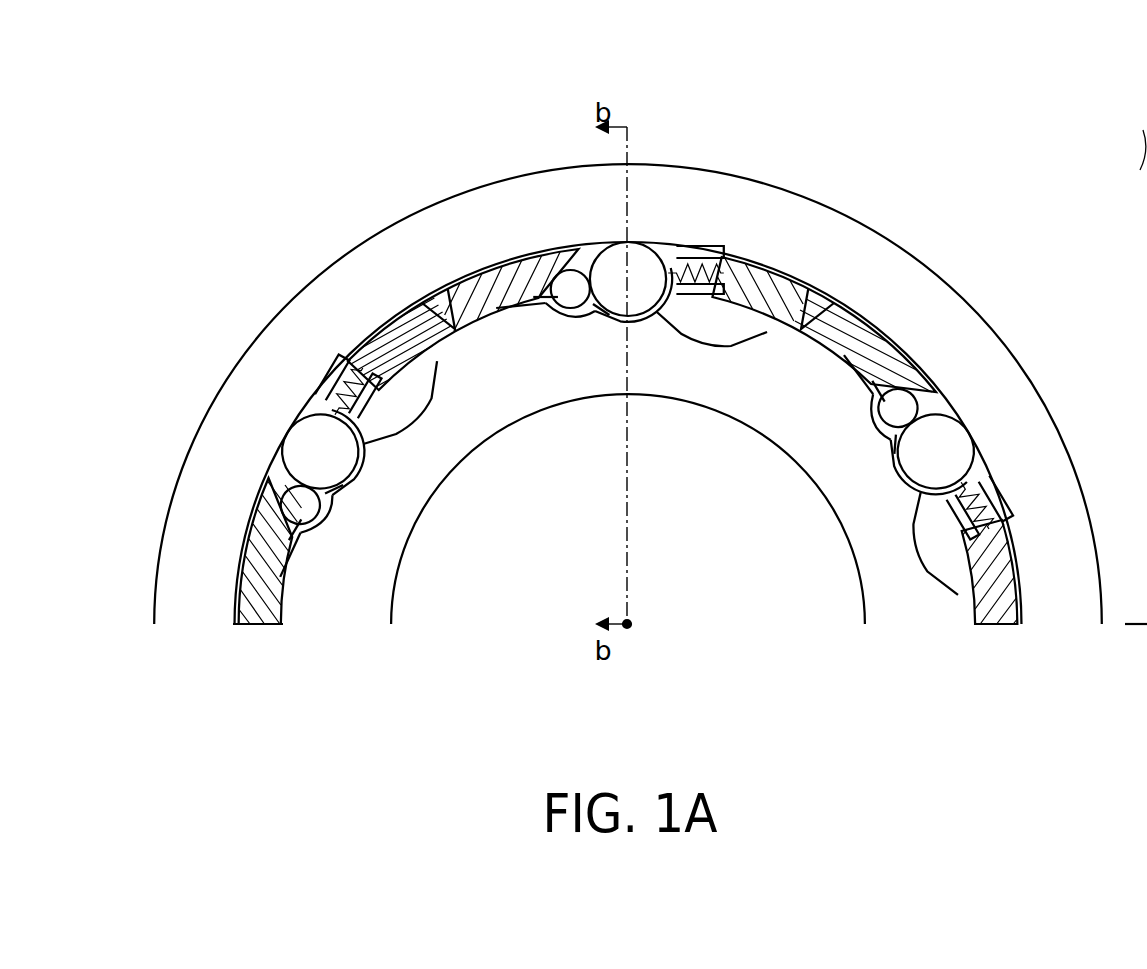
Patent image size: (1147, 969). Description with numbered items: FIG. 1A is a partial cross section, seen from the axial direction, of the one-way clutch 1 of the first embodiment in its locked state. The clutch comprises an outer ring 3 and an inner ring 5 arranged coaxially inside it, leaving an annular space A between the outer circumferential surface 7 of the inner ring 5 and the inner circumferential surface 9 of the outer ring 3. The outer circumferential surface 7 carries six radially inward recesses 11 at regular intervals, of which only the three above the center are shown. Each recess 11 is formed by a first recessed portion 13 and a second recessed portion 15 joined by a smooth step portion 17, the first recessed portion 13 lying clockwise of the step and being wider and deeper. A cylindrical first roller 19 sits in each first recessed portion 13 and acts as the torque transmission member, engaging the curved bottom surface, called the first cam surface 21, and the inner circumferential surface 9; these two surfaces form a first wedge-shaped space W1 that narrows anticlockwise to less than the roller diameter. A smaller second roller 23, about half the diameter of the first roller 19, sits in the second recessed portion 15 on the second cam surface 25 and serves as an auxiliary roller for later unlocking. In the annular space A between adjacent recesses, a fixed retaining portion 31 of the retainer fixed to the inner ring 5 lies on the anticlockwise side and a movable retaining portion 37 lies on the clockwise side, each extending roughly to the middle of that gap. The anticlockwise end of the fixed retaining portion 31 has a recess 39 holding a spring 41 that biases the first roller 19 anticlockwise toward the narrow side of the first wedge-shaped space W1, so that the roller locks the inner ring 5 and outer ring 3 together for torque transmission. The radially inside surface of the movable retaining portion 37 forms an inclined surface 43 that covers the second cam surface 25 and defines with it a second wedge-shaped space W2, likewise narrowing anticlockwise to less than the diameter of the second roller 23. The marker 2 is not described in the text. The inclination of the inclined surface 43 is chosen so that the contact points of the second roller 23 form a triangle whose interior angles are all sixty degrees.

The one-way clutch 1 is at (628, 374).
The adjacent view reference 2 is at (1139, 134).
The outer ring 3 is at (215, 485).
The inner ring 5 is at (480, 420).
The outer circumferential surface 7 is at (266, 623).
The inner circumferential surface 9 is at (1008, 620).
The recess 11 is at (383, 507).
The first recessed portion 13 is at (392, 436).
The second recessed portion 15 is at (340, 525).
The step portion 17 is at (348, 505).
The first roller 19 is at (640, 265).
The first cam surface 21 is at (405, 478).
The second roller 23 is at (562, 275).
The second cam surface 25 is at (318, 540).
The fixed retaining portion 31 is at (563, 421).
The movable retaining portion 37 is at (468, 300).
The recess 39 is at (345, 368).
The spring 41 is at (700, 262).
The inclined surface 43 is at (540, 283).
The first wedge-shaped space W1 is at (660, 252).
The second wedge-shaped space W2 is at (584, 262).
The annular space A is at (256, 628).